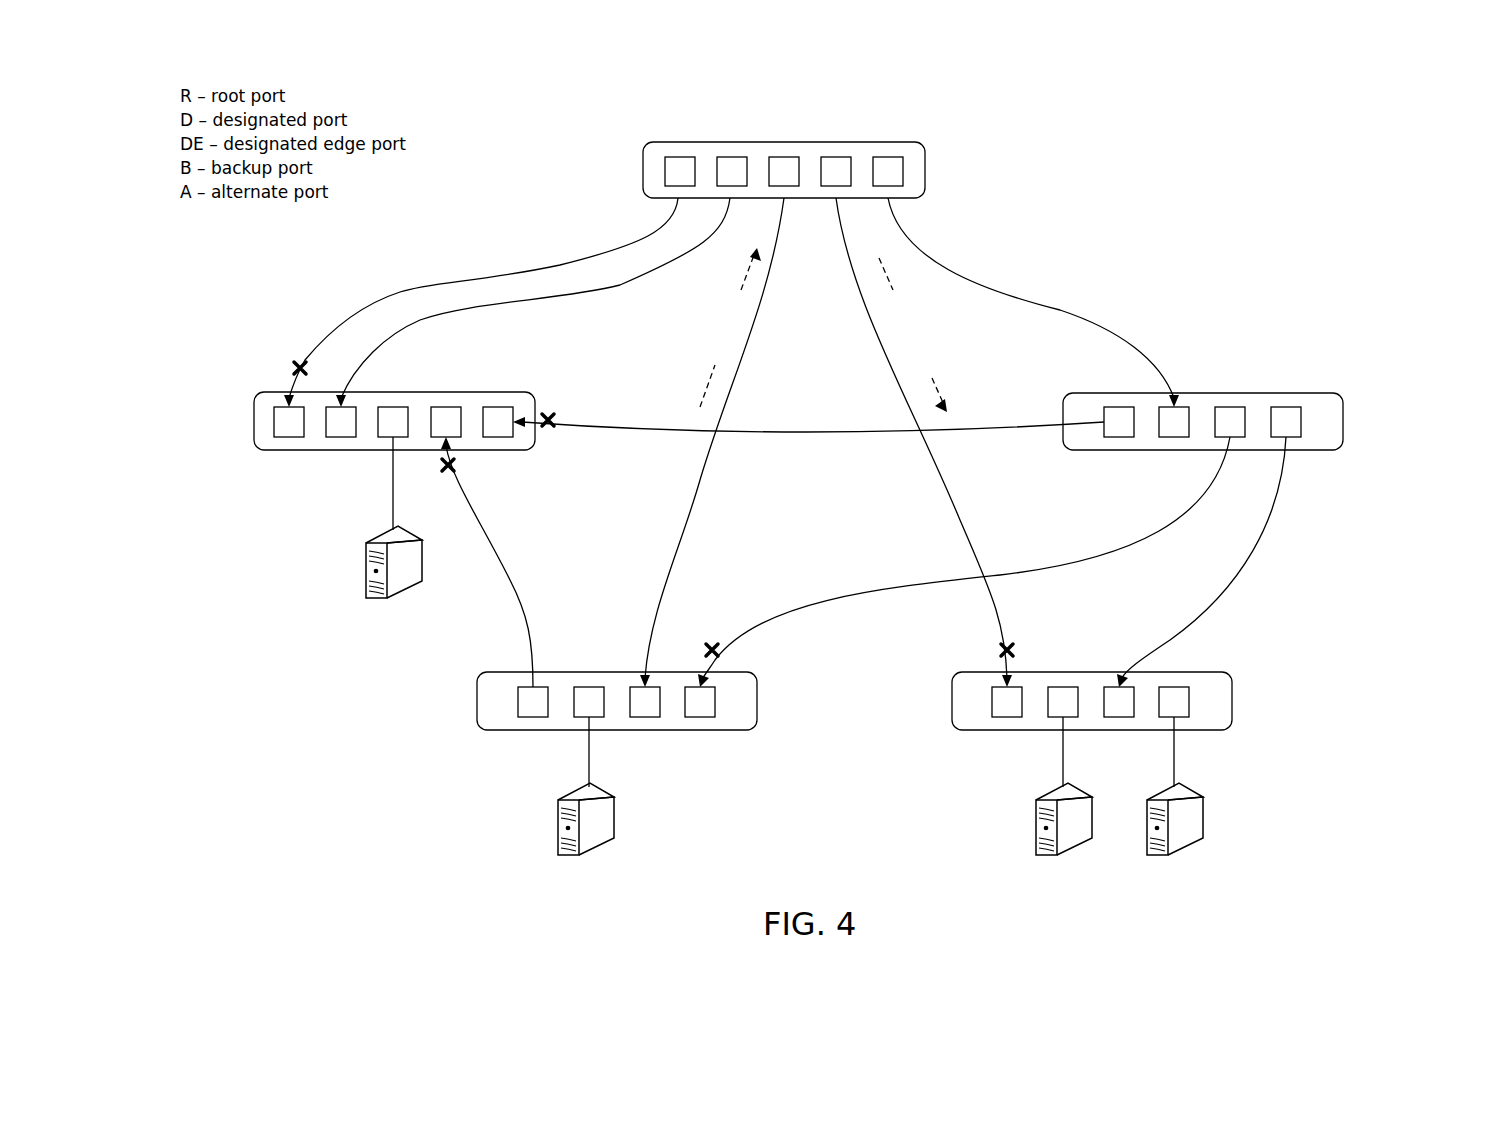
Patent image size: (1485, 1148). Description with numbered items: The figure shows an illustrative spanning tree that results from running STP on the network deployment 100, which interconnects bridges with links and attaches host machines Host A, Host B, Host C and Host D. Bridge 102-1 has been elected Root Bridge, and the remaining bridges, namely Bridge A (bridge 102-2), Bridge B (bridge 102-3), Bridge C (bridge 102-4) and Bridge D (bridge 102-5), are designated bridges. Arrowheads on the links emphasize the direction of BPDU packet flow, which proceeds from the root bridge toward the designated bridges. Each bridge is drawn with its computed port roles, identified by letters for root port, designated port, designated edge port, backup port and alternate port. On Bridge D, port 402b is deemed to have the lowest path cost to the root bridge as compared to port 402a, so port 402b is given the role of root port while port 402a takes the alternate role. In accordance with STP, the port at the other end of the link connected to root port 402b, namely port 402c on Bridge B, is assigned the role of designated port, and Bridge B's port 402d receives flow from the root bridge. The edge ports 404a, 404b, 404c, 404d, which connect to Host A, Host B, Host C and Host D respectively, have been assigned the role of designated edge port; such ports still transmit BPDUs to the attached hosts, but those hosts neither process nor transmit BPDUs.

The network deployment 100 is at (1290, 100).
The root bridge 102-1 is at (925, 170).
The bridge 102-2 is at (254, 422).
The bridge 102-3 is at (1313, 393).
The bridge 102-4 is at (477, 702).
The bridge 102-5 is at (1232, 700).
The port 402a is at (993, 697).
The root port 402b is at (1133, 687).
The designated port 402c is at (1286, 407).
The port 402d is at (1160, 410).
The designated edge port 404a is at (379, 436).
The designated edge port 404b is at (589, 687).
The designated edge port 404c is at (1063, 687).
The designated edge port 404d is at (1190, 713).